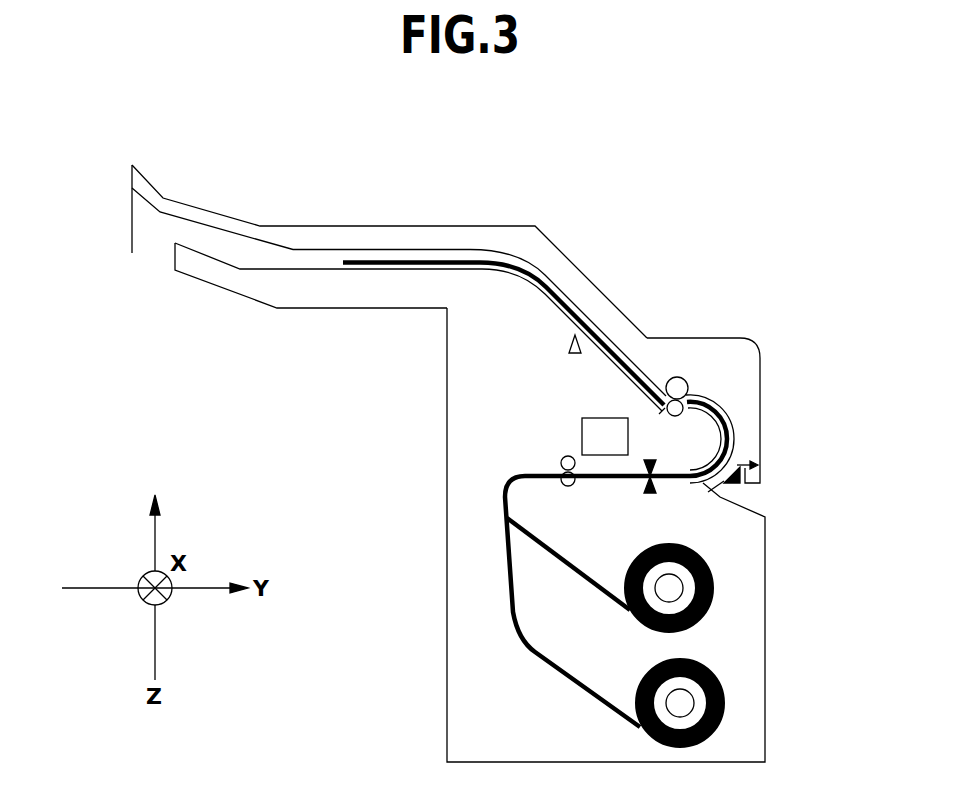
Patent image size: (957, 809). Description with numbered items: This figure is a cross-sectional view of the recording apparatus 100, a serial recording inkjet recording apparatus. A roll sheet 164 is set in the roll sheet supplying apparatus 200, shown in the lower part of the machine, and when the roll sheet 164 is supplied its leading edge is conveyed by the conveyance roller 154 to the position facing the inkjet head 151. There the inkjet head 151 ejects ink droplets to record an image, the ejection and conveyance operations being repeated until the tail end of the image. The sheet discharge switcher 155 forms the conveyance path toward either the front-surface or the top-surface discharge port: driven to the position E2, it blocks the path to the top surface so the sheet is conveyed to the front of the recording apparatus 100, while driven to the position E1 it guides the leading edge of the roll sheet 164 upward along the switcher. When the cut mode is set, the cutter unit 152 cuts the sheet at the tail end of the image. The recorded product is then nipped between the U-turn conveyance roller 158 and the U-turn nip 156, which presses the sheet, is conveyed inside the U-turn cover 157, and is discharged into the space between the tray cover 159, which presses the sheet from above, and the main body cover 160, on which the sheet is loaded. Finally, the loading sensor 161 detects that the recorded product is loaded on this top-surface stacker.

The recording apparatus 100 is at (805, 272).
The inkjet head 151 is at (582, 430).
The cutter unit 152 is at (640, 485).
The conveyance roller 154 is at (561, 460).
The sheet discharge switcher 155 is at (741, 484).
The U-turn nip 156 is at (676, 417).
The U-turn cover 157 is at (738, 399).
The U-turn conveyance roller 158 is at (678, 376).
The tray cover 159 is at (590, 246).
The main body cover 160 is at (300, 270).
The loading sensor 161 is at (568, 346).
The roll sheet 164 is at (713, 595).
The roll sheet supplying apparatus 200 is at (735, 563).
The position E1 is at (701, 499).
The position E2 is at (765, 463).